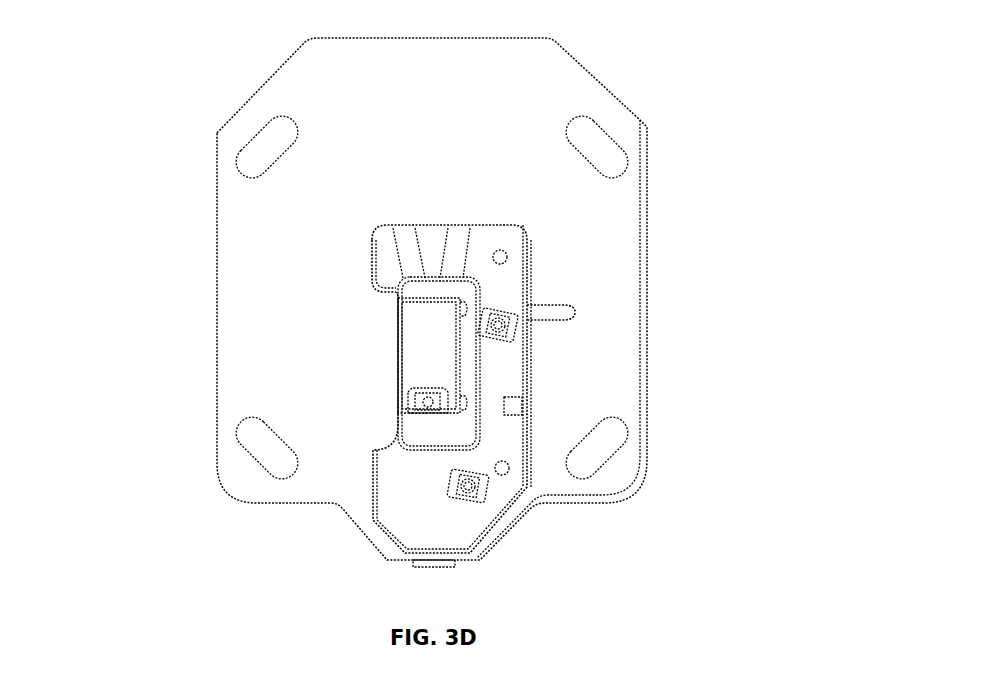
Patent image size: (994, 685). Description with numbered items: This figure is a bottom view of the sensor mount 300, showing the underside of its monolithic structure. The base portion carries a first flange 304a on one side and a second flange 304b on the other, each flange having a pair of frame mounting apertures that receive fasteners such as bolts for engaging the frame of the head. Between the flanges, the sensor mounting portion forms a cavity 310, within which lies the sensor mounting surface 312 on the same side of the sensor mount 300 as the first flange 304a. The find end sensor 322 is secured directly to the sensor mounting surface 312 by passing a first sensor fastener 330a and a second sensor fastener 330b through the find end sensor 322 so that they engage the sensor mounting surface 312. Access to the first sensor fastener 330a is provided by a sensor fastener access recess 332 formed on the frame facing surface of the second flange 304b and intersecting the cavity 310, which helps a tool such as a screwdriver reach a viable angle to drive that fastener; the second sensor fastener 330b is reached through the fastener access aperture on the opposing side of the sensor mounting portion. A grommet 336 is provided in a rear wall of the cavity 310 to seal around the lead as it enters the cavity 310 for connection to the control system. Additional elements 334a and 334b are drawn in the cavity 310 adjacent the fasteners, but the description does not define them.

The sensor mount 300 is at (760, 65).
The first flange 304a is at (215, 178).
The second flange 304b is at (648, 147).
The cavity 310 is at (386, 268).
The sensor mounting surface 312 is at (400, 358).
The find end sensor 322 is at (417, 413).
The first sensor fastener 330a is at (467, 412).
The second sensor fastener 330b is at (467, 307).
The sensor fastener access recess 332 is at (578, 312).
The first fastener clip 334a is at (517, 337).
The second fastener clip 334b is at (488, 495).
The grommet 336 is at (428, 567).